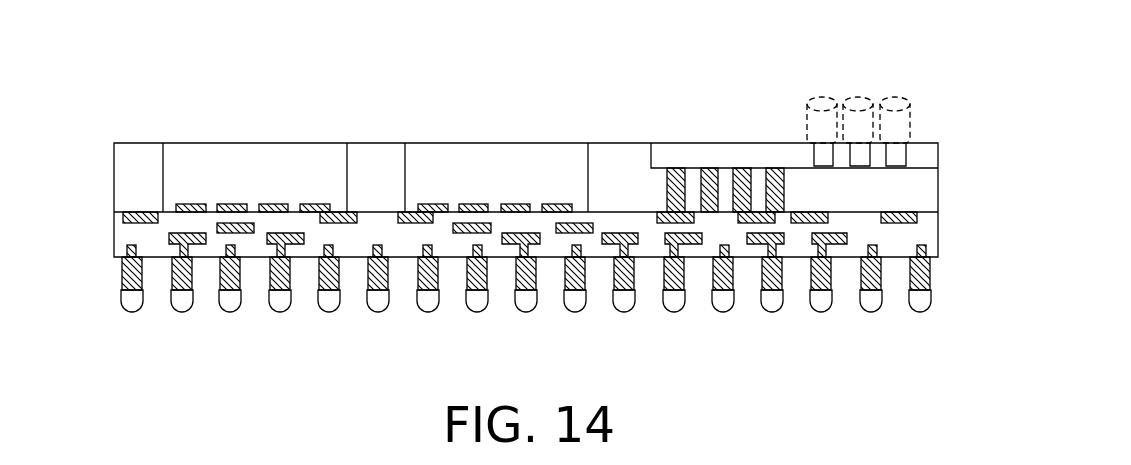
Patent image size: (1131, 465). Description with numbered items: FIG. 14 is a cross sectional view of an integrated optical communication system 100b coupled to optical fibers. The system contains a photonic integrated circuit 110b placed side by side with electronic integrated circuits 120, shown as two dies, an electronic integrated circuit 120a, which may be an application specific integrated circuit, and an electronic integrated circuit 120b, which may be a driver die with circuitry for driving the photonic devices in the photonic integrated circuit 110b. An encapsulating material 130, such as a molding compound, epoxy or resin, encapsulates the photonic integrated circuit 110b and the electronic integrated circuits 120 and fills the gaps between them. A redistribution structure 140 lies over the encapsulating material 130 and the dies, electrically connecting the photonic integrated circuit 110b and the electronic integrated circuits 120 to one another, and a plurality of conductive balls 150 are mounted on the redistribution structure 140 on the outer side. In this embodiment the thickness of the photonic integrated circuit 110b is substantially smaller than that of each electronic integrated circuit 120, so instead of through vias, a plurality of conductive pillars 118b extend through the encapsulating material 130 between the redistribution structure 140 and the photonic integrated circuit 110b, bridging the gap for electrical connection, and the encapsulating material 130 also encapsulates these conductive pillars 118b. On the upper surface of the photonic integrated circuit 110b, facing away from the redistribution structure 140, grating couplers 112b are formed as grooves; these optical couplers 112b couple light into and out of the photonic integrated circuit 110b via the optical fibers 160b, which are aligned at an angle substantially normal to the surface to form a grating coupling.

The integrated optical communication system 100b is at (969, 92).
The photonic integrated circuit 110b is at (833, 118).
The grating couplers 112b is at (906, 152).
The conductive pillars 118b is at (678, 170).
The electronic integrated circuits 120 is at (375, 141).
The electronic integrated circuit 120a is at (239, 157).
The electronic integrated circuit 120b is at (458, 157).
The encapsulating material 130 is at (930, 186).
The redistribution structure 140 is at (930, 240).
The conductive balls 150 is at (933, 298).
The optical fibers 160b is at (895, 96).